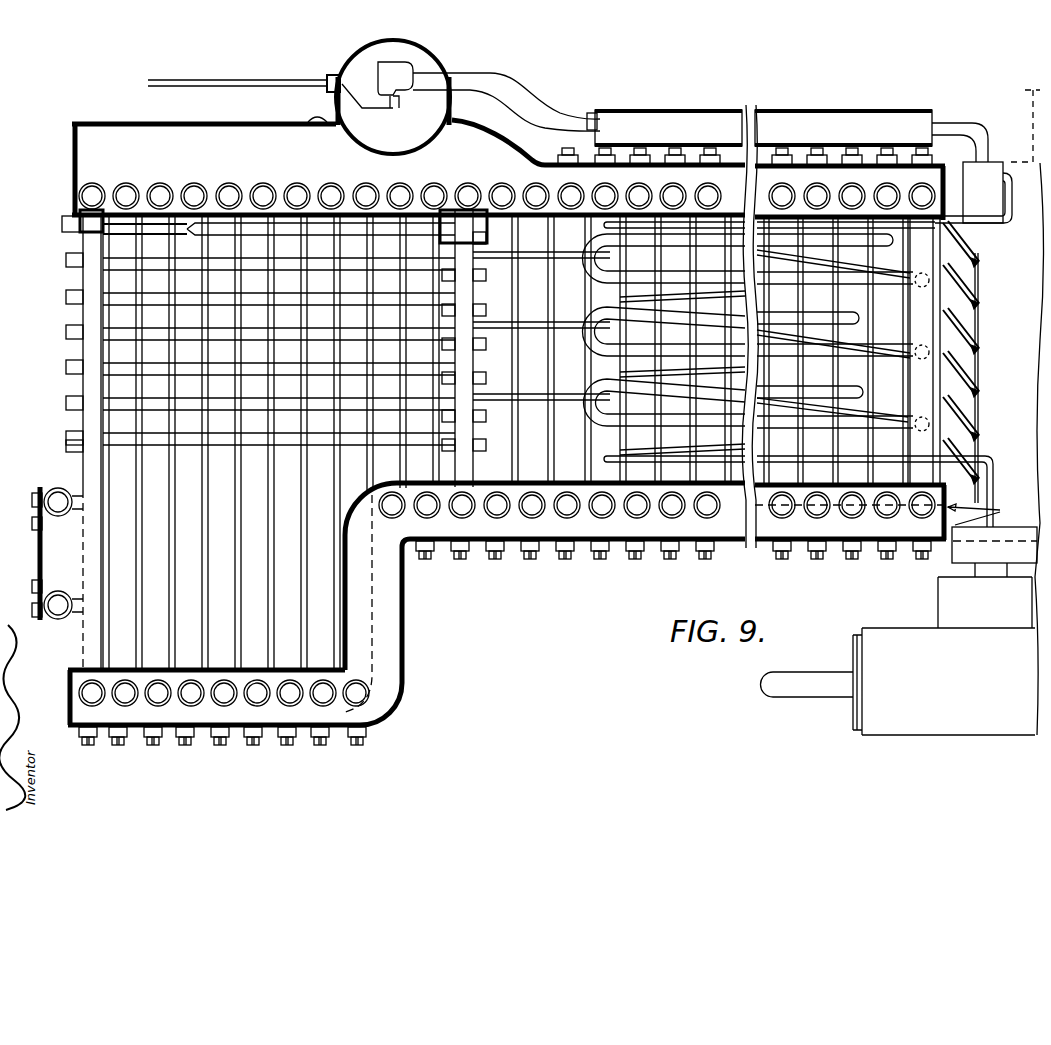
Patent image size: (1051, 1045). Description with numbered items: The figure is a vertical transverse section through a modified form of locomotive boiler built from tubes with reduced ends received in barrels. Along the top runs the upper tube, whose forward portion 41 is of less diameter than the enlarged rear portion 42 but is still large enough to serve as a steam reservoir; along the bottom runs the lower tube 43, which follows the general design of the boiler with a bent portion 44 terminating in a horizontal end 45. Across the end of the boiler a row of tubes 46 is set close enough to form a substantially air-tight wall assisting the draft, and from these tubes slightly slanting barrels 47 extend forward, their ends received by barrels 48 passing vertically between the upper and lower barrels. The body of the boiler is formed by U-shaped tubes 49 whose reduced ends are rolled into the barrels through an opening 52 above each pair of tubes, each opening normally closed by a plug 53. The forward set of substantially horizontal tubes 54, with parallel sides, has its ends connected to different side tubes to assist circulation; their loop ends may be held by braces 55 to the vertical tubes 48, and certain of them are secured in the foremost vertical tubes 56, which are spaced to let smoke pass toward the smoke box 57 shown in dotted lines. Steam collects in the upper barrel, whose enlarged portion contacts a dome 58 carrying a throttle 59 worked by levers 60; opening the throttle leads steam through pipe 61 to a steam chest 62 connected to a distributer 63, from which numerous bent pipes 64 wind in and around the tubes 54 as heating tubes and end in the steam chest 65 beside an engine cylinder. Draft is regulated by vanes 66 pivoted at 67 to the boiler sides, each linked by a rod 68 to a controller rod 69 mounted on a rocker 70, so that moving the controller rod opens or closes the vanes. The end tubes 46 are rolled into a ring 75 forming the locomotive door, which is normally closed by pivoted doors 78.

The forward portion of upper tube 41 is at (542, 165).
The rear portion of upper tube 42 is at (272, 122).
The lower tube 43 is at (492, 523).
The bent portion 44 is at (388, 598).
The horizontal end 45 is at (358, 718).
The tubes 46 is at (97, 326).
The barrels 47 is at (118, 303).
The vertical barrels 48 is at (468, 300).
The U-shaped tubes 49 is at (318, 608).
The opening 52 is at (572, 165).
The plugs 53 is at (604, 161).
The forward horizontal tubes 54 is at (796, 235).
The braces 55 is at (532, 262).
The foremost vertical tubes 56 is at (925, 258).
The smoke box 57 is at (997, 378).
The dome 58 is at (440, 68).
The throttle 59 is at (380, 68).
The levers 60 is at (285, 82).
The pipe 61 is at (500, 92).
The steam chest 62 is at (680, 106).
The distributer 63 is at (983, 192).
The bent pipes 64 is at (1011, 205).
The steam chest 65 is at (962, 548).
The vanes 66 is at (975, 306).
The pivotal connection 67 is at (980, 392).
The rod 68 is at (975, 413).
The controller rod 69 is at (840, 526).
The rocker 70 is at (987, 511).
The ring 75 is at (57, 528).
The doors 78 is at (38, 550).